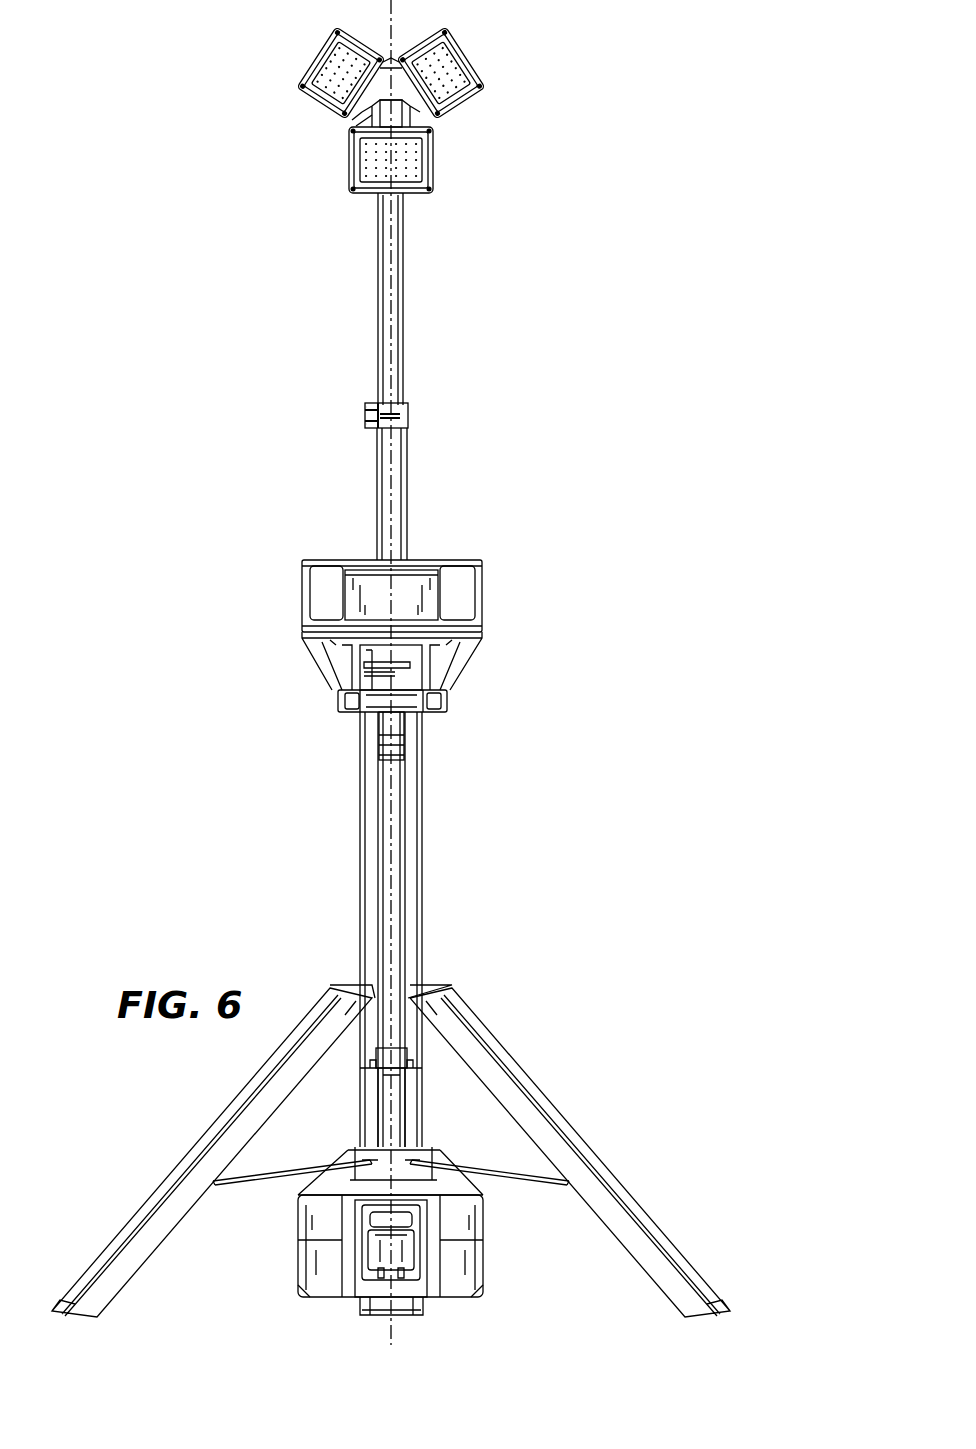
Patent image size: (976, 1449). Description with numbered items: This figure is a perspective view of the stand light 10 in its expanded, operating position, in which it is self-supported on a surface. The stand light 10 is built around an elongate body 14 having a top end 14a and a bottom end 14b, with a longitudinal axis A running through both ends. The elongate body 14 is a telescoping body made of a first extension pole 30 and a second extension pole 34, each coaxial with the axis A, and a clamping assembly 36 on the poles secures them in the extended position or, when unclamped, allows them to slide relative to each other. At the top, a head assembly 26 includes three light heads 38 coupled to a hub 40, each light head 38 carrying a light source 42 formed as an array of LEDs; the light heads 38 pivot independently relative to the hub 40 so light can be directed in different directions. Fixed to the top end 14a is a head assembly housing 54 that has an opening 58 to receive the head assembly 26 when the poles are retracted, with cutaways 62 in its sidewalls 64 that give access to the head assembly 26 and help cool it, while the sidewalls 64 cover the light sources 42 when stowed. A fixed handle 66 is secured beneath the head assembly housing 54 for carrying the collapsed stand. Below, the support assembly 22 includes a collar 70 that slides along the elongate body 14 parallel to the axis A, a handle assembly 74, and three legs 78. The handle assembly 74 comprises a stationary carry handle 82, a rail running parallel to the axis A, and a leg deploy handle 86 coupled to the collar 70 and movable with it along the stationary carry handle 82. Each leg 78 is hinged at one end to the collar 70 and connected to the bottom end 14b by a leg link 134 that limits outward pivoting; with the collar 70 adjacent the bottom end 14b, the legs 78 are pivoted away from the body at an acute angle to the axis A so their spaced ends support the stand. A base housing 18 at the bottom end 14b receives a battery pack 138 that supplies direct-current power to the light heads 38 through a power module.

The stand light 10 is at (641, 122).
The elongate body 14 is at (365, 903).
The top end 14a is at (448, 132).
The bottom end 14b is at (493, 1275).
The base housing 18 is at (318, 1235).
The support assembly 22 is at (308, 710).
The head assembly 26 is at (300, 122).
The first extension pole 30 is at (378, 323).
The second extension pole 34 is at (377, 495).
The clamping assembly 36 is at (367, 413).
The light head 38 is at (330, 52).
The hub 40 is at (388, 106).
The light source 42 is at (335, 75).
The head assembly housing 54 is at (285, 583).
The opening 58 is at (452, 586).
The cutaway 62 is at (333, 673).
The sidewall 64 is at (332, 690).
The fixed handle 66 is at (445, 698).
The collar 70 is at (413, 1047).
The handle assembly 74 is at (468, 676).
The leg 78 is at (150, 1208).
The stationary carry handle 82 is at (400, 862).
The leg deploy handle 86 is at (398, 1117).
The leg link 134 is at (265, 1172).
The battery pack 138 is at (405, 1243).
The longitudinal axis A is at (389, 255).